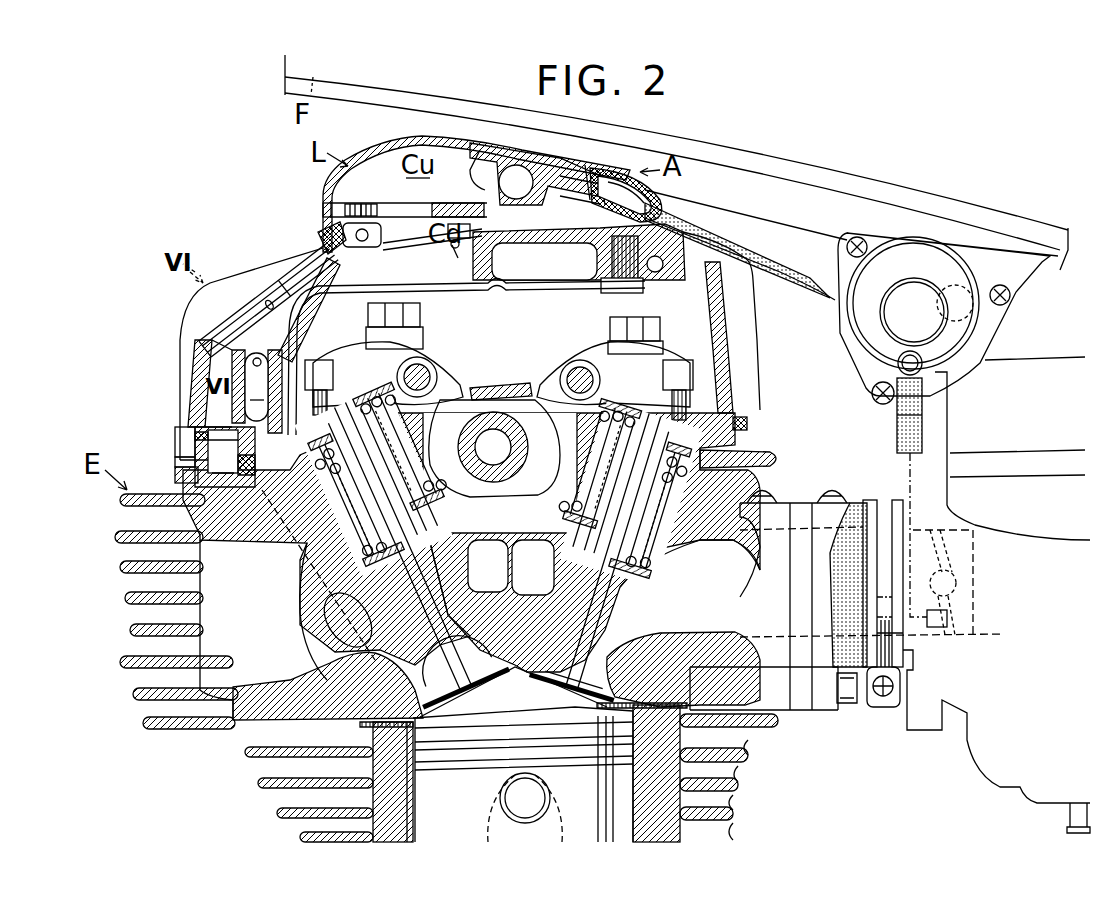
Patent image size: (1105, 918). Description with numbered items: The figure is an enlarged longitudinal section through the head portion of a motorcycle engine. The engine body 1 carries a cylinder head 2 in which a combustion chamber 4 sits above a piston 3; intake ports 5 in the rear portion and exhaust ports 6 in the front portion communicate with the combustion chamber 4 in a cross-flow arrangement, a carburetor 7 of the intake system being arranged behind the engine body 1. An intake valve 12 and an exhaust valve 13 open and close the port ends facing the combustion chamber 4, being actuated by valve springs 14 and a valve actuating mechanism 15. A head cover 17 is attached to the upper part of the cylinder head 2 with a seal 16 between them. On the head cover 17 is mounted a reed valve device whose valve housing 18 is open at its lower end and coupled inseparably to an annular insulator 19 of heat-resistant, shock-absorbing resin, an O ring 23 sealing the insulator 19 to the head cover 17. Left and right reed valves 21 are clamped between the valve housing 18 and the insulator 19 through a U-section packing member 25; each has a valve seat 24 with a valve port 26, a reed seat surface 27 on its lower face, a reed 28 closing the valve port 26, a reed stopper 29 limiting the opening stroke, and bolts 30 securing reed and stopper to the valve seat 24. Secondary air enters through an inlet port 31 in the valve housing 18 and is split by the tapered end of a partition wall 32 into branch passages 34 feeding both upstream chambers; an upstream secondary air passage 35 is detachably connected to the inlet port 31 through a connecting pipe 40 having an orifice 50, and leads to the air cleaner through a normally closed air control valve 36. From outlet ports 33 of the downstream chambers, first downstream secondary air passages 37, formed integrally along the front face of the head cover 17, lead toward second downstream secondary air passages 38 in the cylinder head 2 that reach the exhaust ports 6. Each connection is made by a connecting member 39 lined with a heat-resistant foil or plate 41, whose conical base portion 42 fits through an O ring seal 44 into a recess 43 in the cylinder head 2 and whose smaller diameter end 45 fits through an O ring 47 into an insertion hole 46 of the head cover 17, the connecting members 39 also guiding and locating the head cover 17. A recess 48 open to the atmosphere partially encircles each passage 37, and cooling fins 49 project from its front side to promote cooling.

The body 1 is at (738, 737).
The cylinder head 2 is at (727, 449).
The piston 3 is at (588, 809).
The combustion chamber 4 is at (500, 703).
The intake ports 5 is at (707, 628).
The exhaust ports 6 is at (427, 668).
The carburetor 7 is at (1033, 445).
The intake valve 12 is at (577, 642).
The exhaust valve 13 is at (492, 662).
The valve springs 14 is at (410, 462).
The valve actuating mechanism 15 is at (503, 340).
The seal 16 is at (748, 425).
The head cover 17 is at (722, 350).
The valve housing 18 is at (368, 158).
The insulator 19 is at (320, 240).
The reed valves 21 is at (466, 352).
The O ring 23 is at (314, 310).
The valve seat 24 is at (446, 207).
The packing member 25 is at (323, 211).
The valve port 26 is at (378, 207).
The reed seat surface 27 is at (353, 207).
The reed 28 is at (340, 232).
The reed stopper 29 is at (425, 258).
The bolts 30 is at (473, 245).
The inlet port 31 is at (578, 165).
The partition wall 32 is at (497, 160).
The outlet ports 33 is at (385, 258).
The branch passages 34 is at (540, 160).
The upstream secondary air passage 35 is at (736, 218).
The air control valve 36 is at (900, 327).
The first downstream secondary air passages 37 is at (262, 300).
The second downstream secondary air passages 38 is at (326, 539).
The connecting members 39 is at (200, 447).
The connecting pipe 40 is at (602, 174).
The heat-resistant metal foil or plate 41 is at (235, 386).
The conical base portion 42 is at (245, 470).
The recess 43 is at (190, 465).
The O ring seal 44 is at (205, 480).
The smaller diameter end 45 is at (272, 460).
The insertion holes 46 is at (180, 428).
The O rings 47 is at (255, 410).
The recess 48 is at (248, 397).
The cooling fins 49 is at (180, 352).
The orifice 50 is at (626, 176).